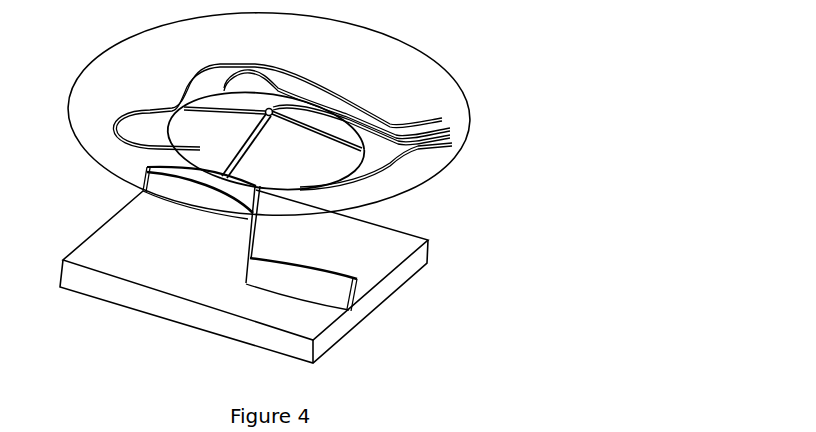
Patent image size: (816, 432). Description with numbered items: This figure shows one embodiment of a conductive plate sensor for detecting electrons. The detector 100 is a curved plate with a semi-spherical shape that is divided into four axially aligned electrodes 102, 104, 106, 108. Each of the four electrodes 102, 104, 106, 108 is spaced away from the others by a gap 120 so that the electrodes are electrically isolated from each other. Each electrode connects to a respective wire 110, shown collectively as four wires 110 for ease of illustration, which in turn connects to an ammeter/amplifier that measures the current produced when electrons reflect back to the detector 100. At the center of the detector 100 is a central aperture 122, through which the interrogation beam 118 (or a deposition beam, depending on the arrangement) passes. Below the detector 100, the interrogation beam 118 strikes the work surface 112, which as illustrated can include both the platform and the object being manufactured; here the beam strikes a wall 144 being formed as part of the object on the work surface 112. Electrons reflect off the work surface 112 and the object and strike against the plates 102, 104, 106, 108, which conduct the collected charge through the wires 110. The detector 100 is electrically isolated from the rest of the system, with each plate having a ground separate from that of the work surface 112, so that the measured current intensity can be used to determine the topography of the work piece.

The detector 100 is at (414, 44).
The electrode 102 is at (207, 130).
The electrode 104 is at (288, 160).
The electrode 106 is at (321, 122).
The electrode 108 is at (268, 104).
The wires 110 is at (449, 145).
The work surface 112 is at (251, 284).
The interrogation beam 118 is at (260, 220).
The gap 120 is at (235, 150).
The central aperture 122 is at (258, 110).
The wall 144 is at (237, 220).